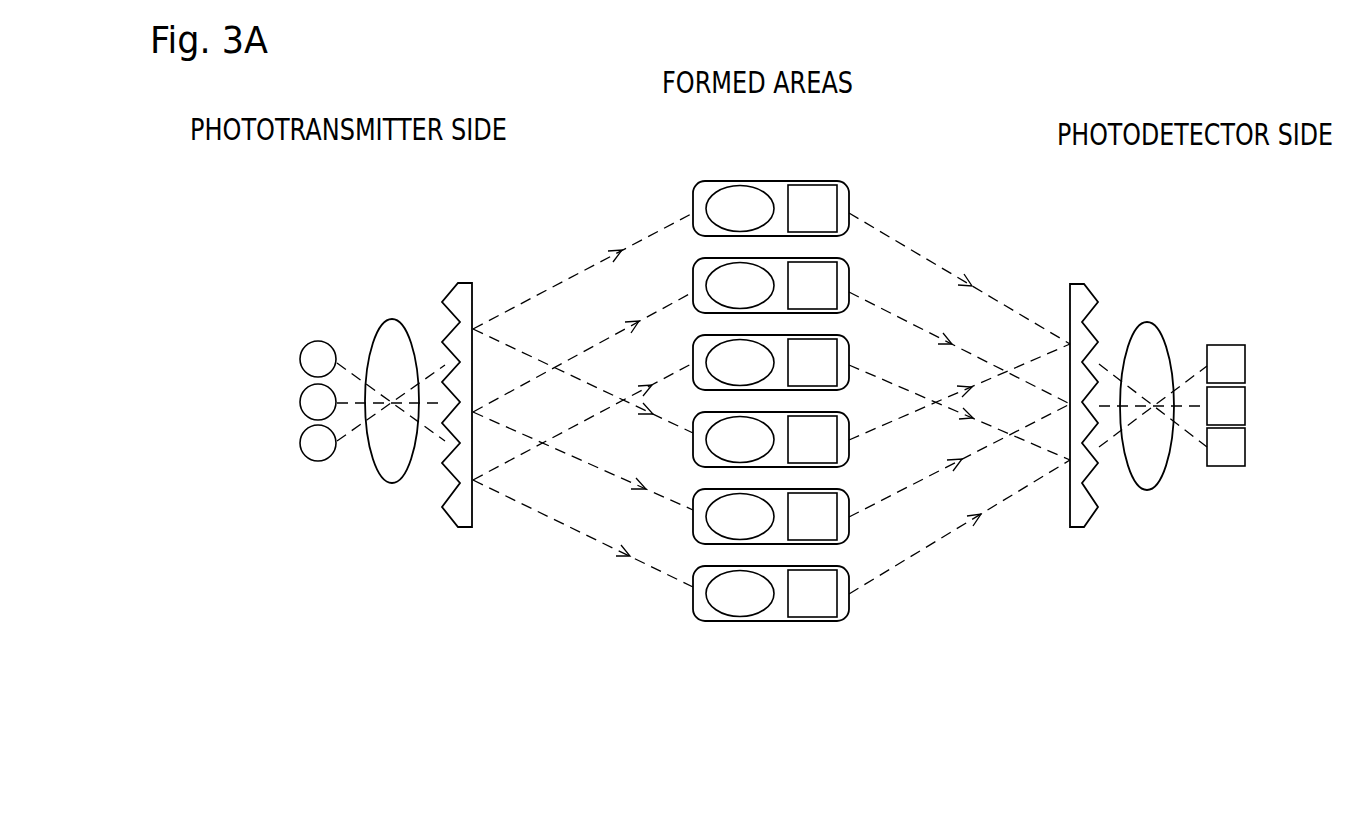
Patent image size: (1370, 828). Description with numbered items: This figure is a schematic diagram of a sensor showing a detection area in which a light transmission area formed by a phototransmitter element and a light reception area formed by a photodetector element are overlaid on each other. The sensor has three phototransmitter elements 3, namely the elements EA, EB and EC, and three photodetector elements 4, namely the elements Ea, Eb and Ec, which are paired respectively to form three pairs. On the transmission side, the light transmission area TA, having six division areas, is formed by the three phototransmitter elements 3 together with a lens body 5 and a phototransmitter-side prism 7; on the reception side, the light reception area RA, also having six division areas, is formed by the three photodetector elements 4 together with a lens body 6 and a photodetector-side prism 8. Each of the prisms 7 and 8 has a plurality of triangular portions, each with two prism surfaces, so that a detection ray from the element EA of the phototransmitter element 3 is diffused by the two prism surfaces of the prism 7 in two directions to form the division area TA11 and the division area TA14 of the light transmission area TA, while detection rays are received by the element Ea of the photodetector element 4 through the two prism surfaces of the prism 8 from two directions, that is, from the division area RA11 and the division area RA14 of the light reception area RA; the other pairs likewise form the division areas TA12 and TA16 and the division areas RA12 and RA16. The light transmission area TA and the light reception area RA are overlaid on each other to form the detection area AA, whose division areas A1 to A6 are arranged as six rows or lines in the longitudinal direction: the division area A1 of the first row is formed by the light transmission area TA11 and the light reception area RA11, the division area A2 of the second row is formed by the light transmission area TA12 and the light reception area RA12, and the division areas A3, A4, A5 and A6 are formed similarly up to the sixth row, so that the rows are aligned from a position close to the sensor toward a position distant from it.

The phototransmitter element 3 is at (286, 380).
The element EA is at (318, 359).
The element EB is at (318, 402).
The element EC is at (318, 443).
The photodetector element 4 is at (1262, 390).
The element Ea is at (1226, 364).
The element Eb is at (1226, 406).
The element Ec is at (1226, 447).
The lens body 5 is at (393, 470).
The lens body 6 is at (1148, 470).
The phototransmitter-side prism 7 is at (462, 517).
The photodetector-side prism 8 is at (1079, 514).
The detection area AA is at (920, 223).
The light transmission area TA is at (633, 565).
The light reception area RA is at (935, 563).
The division area A1 is at (773, 629).
The division area A2 is at (782, 515).
The division area A3 is at (793, 439).
The division area A4 is at (776, 362).
The division area A5 is at (793, 285).
The division area A6 is at (755, 169).
The division area TA11 is at (720, 613).
The division area TA12 is at (708, 530).
The division area TA14 is at (708, 365).
The division area TA16 is at (706, 207).
The division area RA11 is at (815, 608).
The division area RA12 is at (837, 521).
The division area RA14 is at (837, 363).
The division area RA16 is at (807, 192).